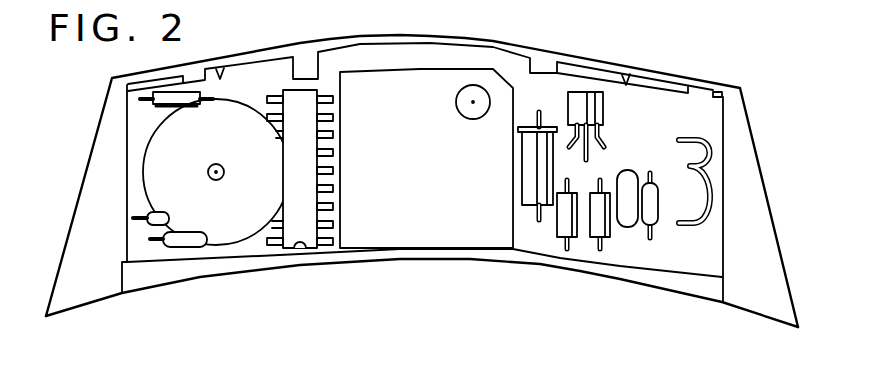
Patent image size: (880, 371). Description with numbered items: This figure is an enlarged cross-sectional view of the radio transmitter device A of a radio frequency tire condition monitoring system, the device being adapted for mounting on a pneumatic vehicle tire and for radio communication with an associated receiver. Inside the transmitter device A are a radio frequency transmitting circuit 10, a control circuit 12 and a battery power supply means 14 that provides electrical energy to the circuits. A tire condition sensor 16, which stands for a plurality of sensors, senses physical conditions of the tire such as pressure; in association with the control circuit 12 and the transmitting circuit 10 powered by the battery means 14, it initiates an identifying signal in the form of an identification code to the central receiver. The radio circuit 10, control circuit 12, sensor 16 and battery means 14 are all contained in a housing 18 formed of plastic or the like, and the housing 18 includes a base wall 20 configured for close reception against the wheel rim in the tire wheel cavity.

The radio frequency transmitting circuit 10 is at (593, 250).
The control circuit 12 is at (300, 256).
The battery power supply means 14 is at (422, 228).
The tire condition sensor 16 is at (220, 228).
The housing 18 is at (760, 161).
The base wall 20 is at (658, 290).
The radio transmitter device A is at (640, 60).